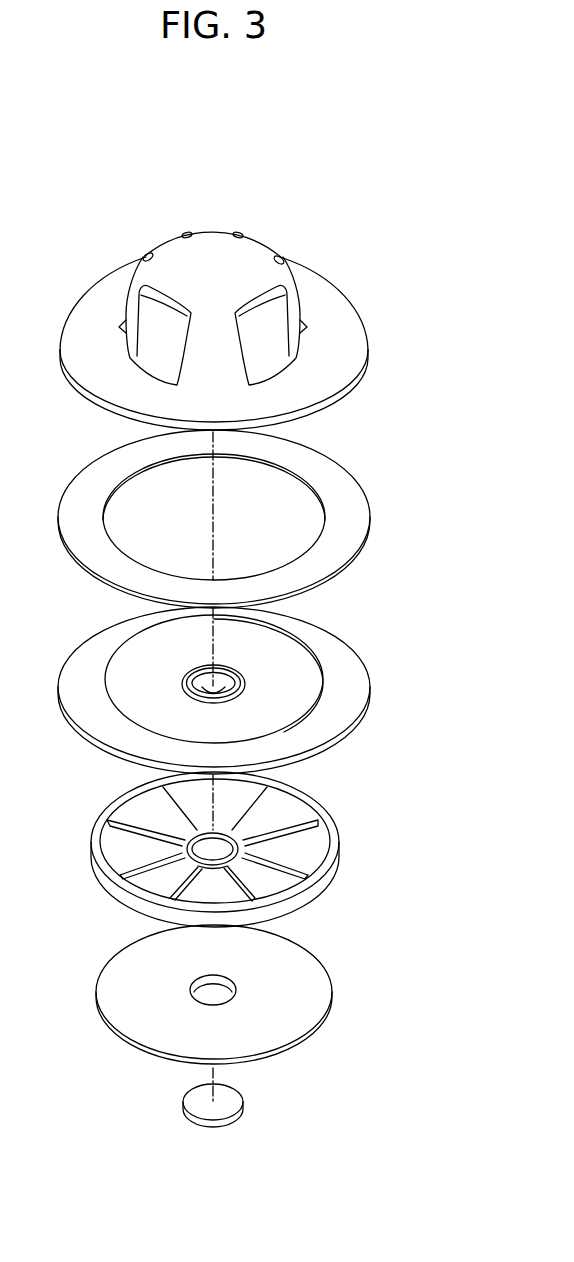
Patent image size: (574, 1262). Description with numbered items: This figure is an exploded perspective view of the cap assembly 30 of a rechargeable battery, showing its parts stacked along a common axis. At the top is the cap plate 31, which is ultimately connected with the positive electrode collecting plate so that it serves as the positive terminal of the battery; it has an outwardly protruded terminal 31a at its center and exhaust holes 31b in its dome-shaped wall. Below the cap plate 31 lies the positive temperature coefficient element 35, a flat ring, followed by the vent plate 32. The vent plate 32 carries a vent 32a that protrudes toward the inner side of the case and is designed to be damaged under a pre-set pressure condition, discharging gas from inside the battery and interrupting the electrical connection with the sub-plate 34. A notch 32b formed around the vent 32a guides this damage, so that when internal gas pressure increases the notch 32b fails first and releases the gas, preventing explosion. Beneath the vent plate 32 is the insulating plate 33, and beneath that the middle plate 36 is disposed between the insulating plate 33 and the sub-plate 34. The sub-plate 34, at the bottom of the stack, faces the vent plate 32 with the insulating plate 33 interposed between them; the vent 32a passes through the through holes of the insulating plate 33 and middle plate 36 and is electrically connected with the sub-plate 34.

The cap assembly 30 is at (225, 118).
The cap plate 31 is at (254, 306).
The terminal 31a is at (248, 260).
The exhaust holes 31b is at (300, 331).
The positive temperature coefficient element 35 is at (340, 490).
The vent plate 32 is at (252, 690).
The vent 32a is at (214, 688).
The notch 32b is at (245, 682).
The insulating plate 33 is at (346, 868).
The middle plate 36 is at (312, 967).
The sub-plate 34 is at (243, 1105).